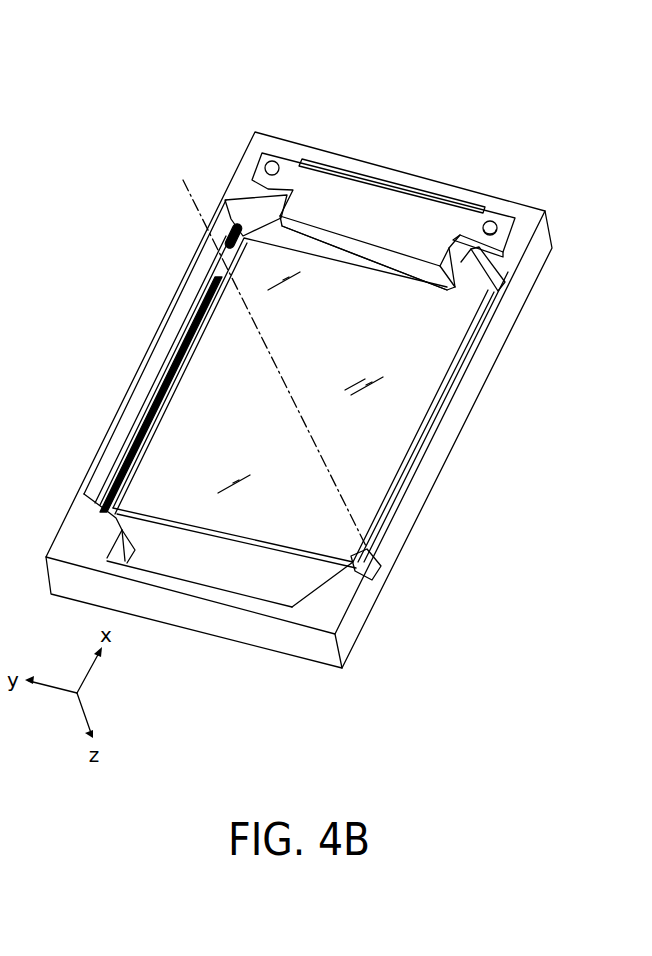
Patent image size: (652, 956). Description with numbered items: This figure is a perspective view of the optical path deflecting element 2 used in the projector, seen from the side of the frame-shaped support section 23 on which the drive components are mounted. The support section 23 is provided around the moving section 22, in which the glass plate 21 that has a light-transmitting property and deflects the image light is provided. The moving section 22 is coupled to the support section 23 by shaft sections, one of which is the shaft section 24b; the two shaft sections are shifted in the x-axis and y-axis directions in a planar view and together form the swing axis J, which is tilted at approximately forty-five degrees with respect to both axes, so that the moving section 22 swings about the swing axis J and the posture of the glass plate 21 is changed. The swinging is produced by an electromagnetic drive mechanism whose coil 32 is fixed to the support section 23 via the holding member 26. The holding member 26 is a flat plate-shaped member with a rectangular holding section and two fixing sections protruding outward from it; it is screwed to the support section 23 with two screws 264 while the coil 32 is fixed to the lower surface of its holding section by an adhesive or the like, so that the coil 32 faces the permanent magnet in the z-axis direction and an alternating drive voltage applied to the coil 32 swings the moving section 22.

The optical path deflecting element 2 is at (559, 138).
The glass plate 21 is at (378, 436).
The moving section 22 is at (268, 585).
The support section 23 is at (272, 160).
The shaft section 24b is at (223, 267).
The holding member 26 is at (404, 183).
The screw 264 is at (491, 221).
The coil 32 is at (338, 250).
The swing axis J is at (269, 351).